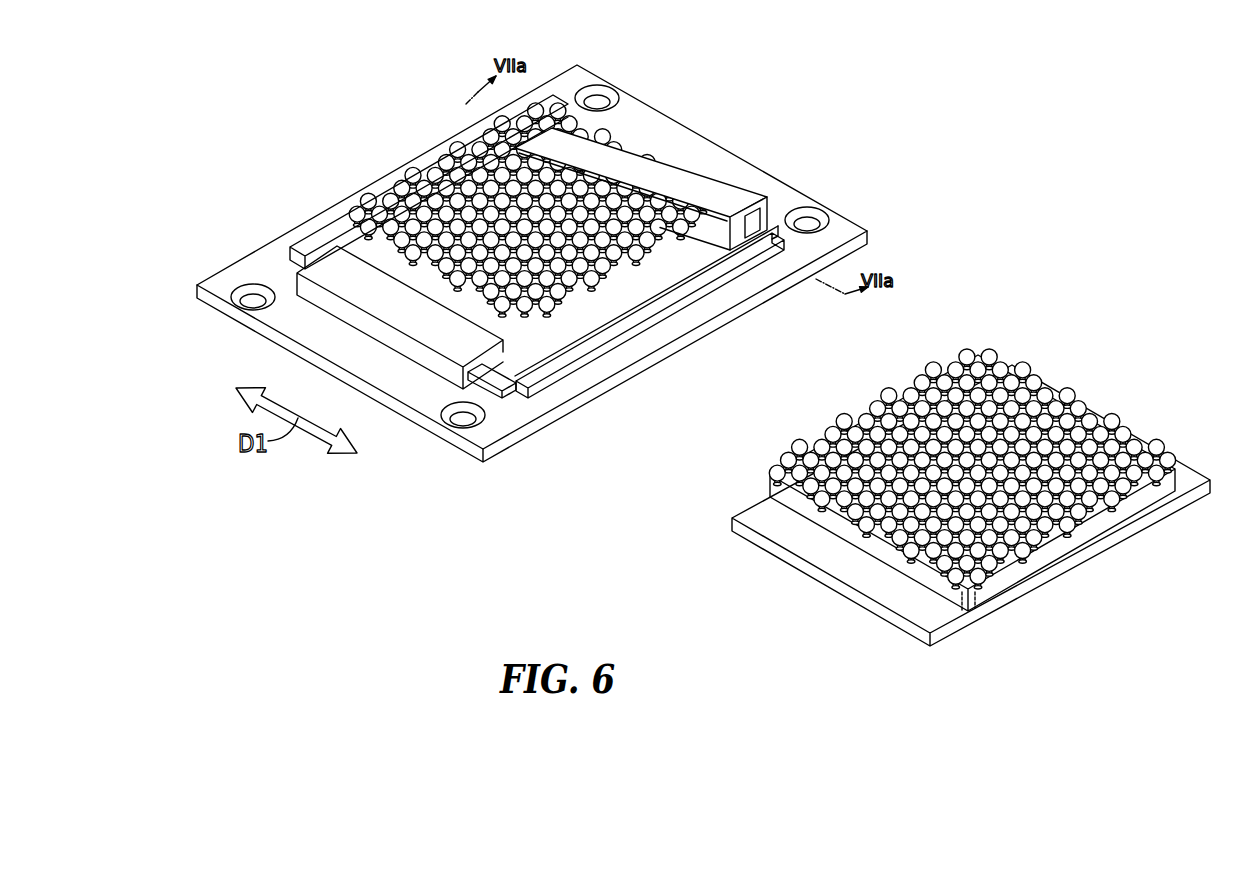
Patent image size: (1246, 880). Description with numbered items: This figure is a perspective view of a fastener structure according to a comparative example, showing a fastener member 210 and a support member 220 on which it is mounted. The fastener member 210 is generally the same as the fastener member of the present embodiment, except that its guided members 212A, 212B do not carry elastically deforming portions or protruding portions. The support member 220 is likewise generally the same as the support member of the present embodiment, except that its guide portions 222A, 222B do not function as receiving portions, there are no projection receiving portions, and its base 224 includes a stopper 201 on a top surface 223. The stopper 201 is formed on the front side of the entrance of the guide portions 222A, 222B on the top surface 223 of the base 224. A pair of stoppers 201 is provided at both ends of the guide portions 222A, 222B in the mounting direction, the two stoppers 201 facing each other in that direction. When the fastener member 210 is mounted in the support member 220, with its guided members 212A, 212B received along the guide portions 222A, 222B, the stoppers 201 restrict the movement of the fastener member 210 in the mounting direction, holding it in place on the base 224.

The support member 220 is at (722, 124).
The stopper 201 is at (308, 240).
The guide portion 222A is at (513, 127).
The guide portion 222B is at (427, 277).
The top surface 223 is at (784, 262).
The base 224 is at (597, 408).
The fastener member 210 is at (949, 461).
The guided member 212A is at (1180, 470).
The guided member 212B is at (795, 539).